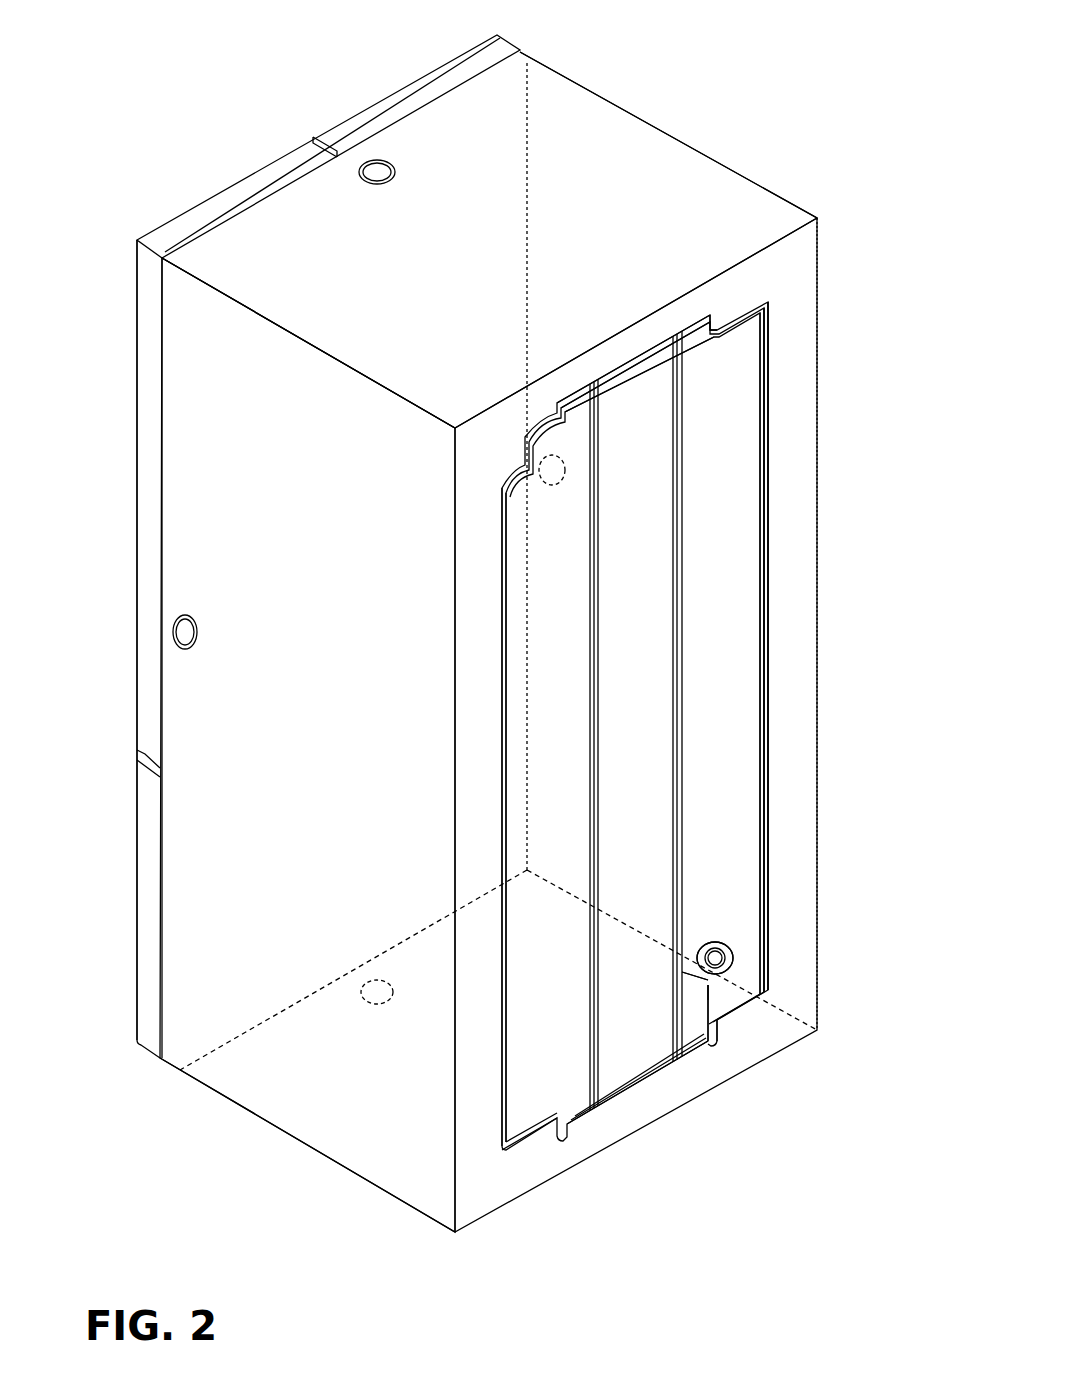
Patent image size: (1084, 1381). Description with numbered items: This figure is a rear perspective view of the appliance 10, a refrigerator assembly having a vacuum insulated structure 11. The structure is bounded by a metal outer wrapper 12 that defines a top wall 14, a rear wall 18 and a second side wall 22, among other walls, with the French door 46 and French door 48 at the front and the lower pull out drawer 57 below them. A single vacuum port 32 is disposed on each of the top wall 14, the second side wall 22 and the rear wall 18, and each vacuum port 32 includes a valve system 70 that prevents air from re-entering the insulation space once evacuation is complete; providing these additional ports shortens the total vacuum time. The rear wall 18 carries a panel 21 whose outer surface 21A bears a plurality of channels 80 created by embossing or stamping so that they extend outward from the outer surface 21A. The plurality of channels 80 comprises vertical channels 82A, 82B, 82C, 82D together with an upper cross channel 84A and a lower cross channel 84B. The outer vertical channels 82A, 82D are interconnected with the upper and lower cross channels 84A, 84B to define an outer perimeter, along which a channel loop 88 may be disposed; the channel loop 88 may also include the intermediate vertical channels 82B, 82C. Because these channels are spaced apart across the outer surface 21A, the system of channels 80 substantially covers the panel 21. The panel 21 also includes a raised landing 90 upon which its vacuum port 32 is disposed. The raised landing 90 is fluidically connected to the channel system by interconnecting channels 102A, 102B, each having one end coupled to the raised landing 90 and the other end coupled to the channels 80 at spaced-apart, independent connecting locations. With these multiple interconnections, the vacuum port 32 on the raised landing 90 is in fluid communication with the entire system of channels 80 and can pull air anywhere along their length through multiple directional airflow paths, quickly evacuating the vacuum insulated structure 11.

The appliance 10 is at (775, 93).
The vacuum insulated structure 11 is at (830, 745).
The outer wrapper 12 is at (182, 1005).
The top wall 14 is at (460, 180).
The rear wall 18 is at (718, 575).
The panel 21 is at (793, 368).
The outer surface 21A is at (795, 292).
The second side wall 22 is at (265, 560).
The vacuum port 32 is at (355, 175).
The French door 46 is at (440, 78).
The French door 48 is at (167, 242).
The lower pull out drawer 57 is at (147, 885).
The valve system 70 is at (727, 966).
The plurality of channels 80 is at (784, 704).
The vertical channel 82A is at (765, 667).
The vertical channel 82B is at (683, 525).
The vertical channel 82C is at (600, 820).
The vertical channel 82D is at (500, 1027).
The upper cross channel 84A is at (640, 350).
The lower cross channel 84B is at (630, 1096).
The channel loop 88 is at (782, 405).
The raised landing 90 is at (735, 957).
The interconnecting channel 102A is at (697, 1035).
The interconnecting channel 102B is at (690, 966).